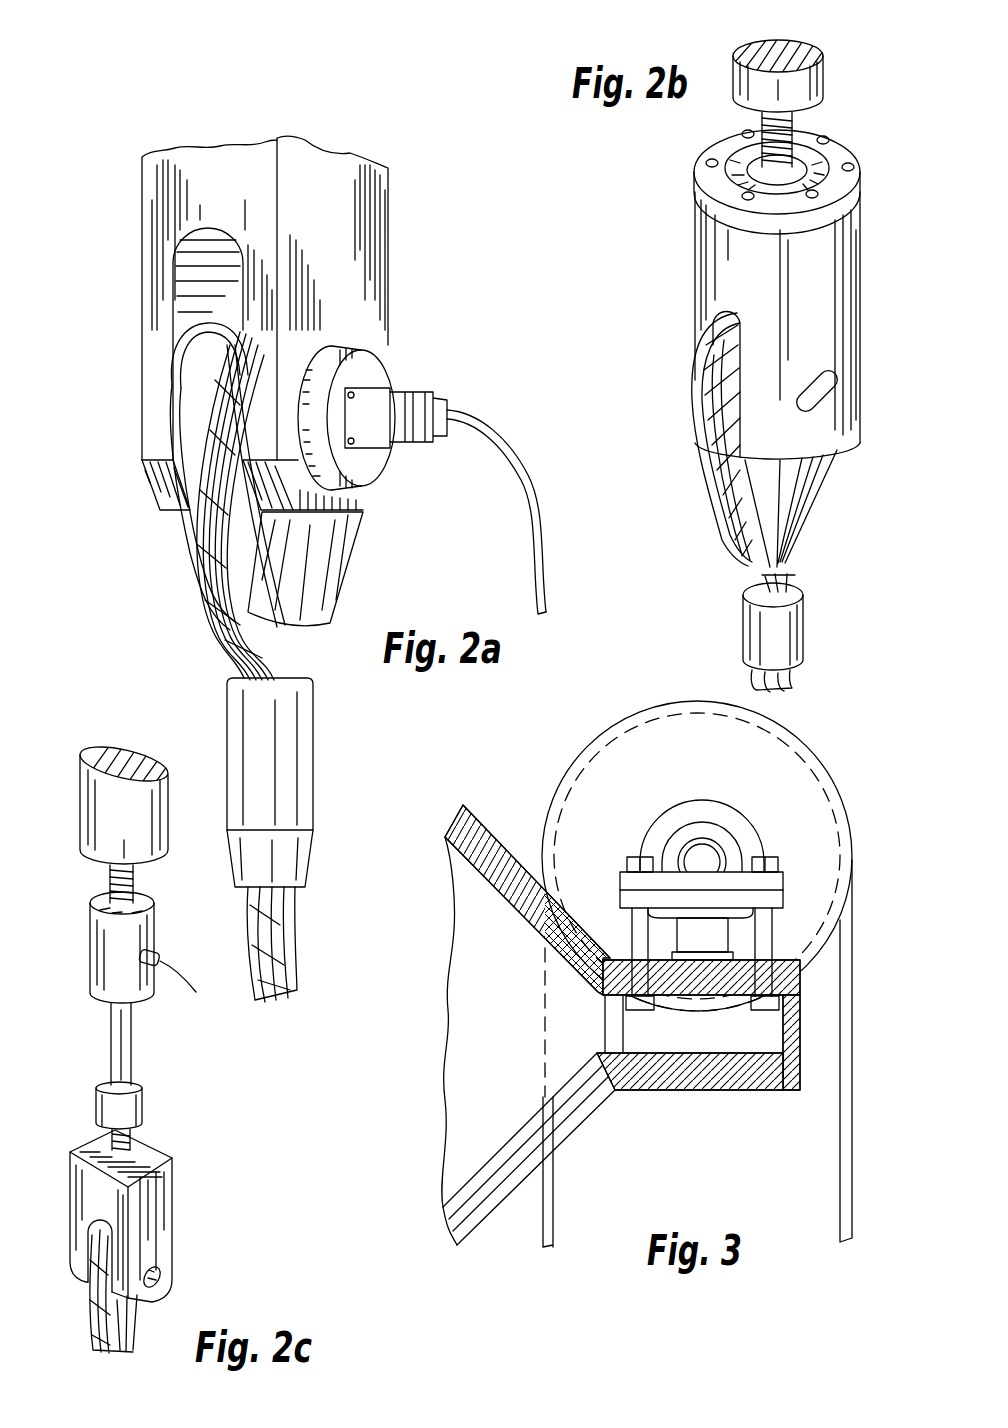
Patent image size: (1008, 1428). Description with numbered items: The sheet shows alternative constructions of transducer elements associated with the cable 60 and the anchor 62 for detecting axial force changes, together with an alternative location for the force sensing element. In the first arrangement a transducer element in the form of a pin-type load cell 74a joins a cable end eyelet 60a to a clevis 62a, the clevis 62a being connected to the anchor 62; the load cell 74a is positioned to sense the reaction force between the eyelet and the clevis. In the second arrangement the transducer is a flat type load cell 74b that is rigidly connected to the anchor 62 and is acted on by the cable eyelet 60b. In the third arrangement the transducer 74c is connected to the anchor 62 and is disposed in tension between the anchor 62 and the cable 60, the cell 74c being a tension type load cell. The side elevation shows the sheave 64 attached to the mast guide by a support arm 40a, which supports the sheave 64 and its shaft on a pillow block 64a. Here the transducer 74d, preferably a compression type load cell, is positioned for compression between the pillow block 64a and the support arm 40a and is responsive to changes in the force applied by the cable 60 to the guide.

In FIG. 3, the support arm 40a is at (648, 1090).
In FIG. 2A, the cable 60 is at (247, 658).
In FIG. 2B, the cable 60 is at (752, 669).
In FIG. 2C, the cable 60 is at (85, 1310).
In FIG. 3, the cable 60 is at (838, 1172).
In FIG. 2A, the cable end eyelet 60a is at (188, 546).
In FIG. 2B, the cable eyelet 60b is at (719, 494).
In FIG. 2B, the anchor 62 is at (737, 67).
In FIG. 2C, the anchor 62 is at (82, 785).
In FIG. 2A, the clevis 62a is at (370, 301).
In FIG. 3, the sheave 64 is at (697, 856).
In FIG. 3, the pillow block 64a is at (668, 860).
In FIG. 2A, the pin-type load cell 74a is at (378, 373).
In FIG. 2B, the flat type load cell 74b is at (700, 272).
In FIG. 2C, the tension type load cell 74c is at (96, 993).
In FIG. 3, the compression type load cell 74d is at (713, 943).